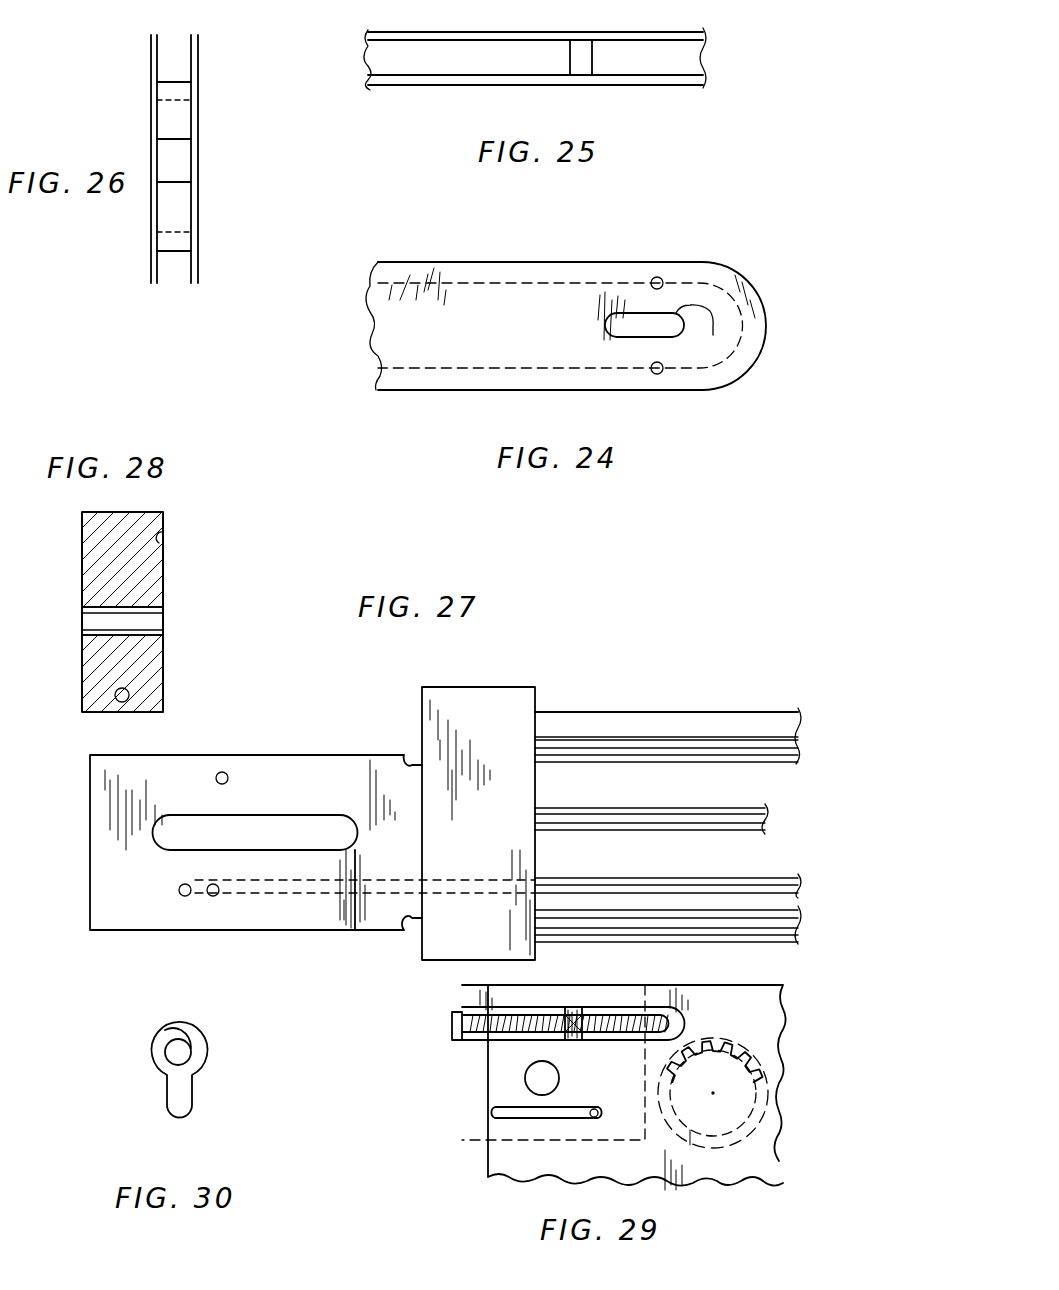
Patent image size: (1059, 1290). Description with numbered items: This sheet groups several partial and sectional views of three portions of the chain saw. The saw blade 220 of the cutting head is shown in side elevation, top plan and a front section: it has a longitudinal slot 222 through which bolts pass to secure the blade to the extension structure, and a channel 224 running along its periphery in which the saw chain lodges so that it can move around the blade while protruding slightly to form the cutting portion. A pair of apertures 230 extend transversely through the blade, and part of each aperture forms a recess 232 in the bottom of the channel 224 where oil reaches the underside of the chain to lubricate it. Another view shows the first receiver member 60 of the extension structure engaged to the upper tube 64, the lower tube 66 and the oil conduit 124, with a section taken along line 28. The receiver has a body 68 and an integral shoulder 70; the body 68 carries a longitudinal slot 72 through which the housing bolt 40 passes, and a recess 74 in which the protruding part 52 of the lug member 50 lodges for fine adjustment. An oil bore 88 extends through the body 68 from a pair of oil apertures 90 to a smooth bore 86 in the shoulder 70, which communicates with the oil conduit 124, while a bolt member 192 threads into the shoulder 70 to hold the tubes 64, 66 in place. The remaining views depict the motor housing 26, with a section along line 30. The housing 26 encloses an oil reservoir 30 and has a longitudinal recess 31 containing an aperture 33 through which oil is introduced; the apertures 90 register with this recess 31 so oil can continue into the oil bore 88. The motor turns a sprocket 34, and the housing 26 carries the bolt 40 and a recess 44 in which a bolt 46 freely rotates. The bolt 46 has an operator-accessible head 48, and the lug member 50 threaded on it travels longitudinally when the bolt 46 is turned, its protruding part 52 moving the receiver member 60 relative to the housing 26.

In FIG. 26, the saw blade 220 is at (198, 152).
In FIG. 25, the saw blade 220 is at (669, 33).
In FIG. 24, the saw blade 220 is at (518, 338).
In FIG. 24, the longitudinal slot 222 is at (713, 336).
In FIG. 26, the channel 224 is at (178, 82).
In FIG. 25, the channel 224 is at (443, 68).
In FIG. 24, the channel 224 is at (462, 285).
In FIG. 24, the apertures 230 is at (657, 277).
In FIG. 26, the recess 232 is at (162, 94).
In FIG. 25, the recess 232 is at (580, 63).
In FIG. 24, the housing 26 is at (773, 266).
In FIG. 29, the housing 26 is at (744, 992).
In FIG. 27, the section line 28 is at (220, 736).
In FIG. 29, the oil reservoir 30 is at (566, 1008).
In FIG. 29, the longitudinal recess 31 is at (490, 1110).
In FIG. 29, the aperture 33 is at (590, 1118).
In FIG. 29, the sprocket 34 is at (715, 1054).
In FIG. 29, the bolt 40 is at (535, 1077).
In FIG. 29, the recess 44 is at (682, 1020).
In FIG. 29, the bolt 46 is at (488, 1024).
In FIG. 30, the bolt 46 is at (164, 1028).
In FIG. 29, the head 48 is at (450, 1028).
In FIG. 29, the lug member 50 is at (560, 1033).
In FIG. 30, the lug member 50 is at (156, 1080).
In FIG. 30, the protruding part 52 is at (182, 1097).
In FIG. 27, the first receiver member 60 is at (328, 745).
In FIG. 27, the upper tube 64 is at (698, 917).
In FIG. 27, the lower tube 66 is at (636, 726).
In FIG. 27, the body 68 is at (134, 876).
In FIG. 27, the shoulder 70 is at (495, 722).
In FIG. 28, the longitudinal slot 72 is at (150, 626).
In FIG. 27, the longitudinal slot 72 is at (330, 834).
In FIG. 28, the recess 74 is at (160, 539).
In FIG. 27, the recess 74 is at (234, 778).
In FIG. 27, the smooth bore 86 is at (480, 890).
In FIG. 28, the oil bore 88 is at (130, 695).
In FIG. 27, the oil bore 88 is at (344, 940).
In FIG. 27, the oil apertures 90 is at (213, 895).
In FIG. 27, the oil conduit 124 is at (640, 884).
In FIG. 27, the bolt member 192 is at (622, 820).